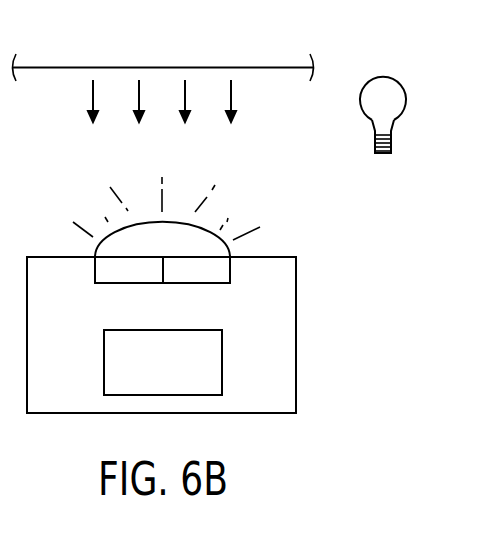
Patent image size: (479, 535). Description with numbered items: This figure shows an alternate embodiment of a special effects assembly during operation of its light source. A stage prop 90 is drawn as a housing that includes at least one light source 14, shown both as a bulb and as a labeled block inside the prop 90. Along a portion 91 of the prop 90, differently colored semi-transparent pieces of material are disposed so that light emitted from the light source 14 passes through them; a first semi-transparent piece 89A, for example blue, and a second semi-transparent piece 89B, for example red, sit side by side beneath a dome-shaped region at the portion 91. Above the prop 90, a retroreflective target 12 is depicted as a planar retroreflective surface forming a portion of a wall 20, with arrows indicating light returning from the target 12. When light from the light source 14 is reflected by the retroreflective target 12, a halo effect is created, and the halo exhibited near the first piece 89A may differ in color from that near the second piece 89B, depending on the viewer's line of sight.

The retroreflective target 12 is at (163, 75).
The wall 20 is at (163, 67).
The light source 14 is at (396, 93).
The stage prop 90 is at (297, 333).
The first semi-transparent piece 89A is at (127, 284).
The second semi-transparent piece 89B is at (196, 284).
The portion of the prop 91 is at (113, 257).